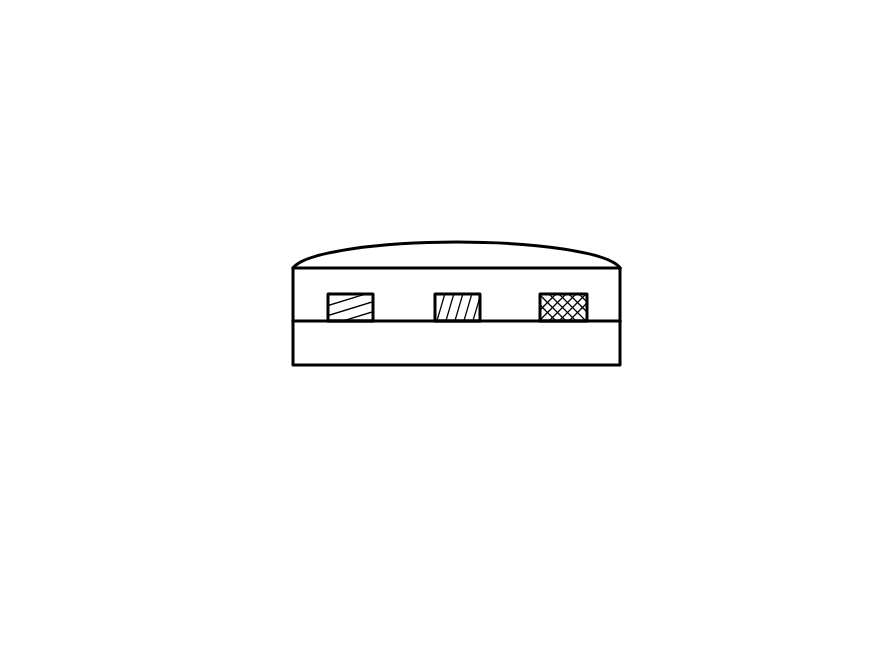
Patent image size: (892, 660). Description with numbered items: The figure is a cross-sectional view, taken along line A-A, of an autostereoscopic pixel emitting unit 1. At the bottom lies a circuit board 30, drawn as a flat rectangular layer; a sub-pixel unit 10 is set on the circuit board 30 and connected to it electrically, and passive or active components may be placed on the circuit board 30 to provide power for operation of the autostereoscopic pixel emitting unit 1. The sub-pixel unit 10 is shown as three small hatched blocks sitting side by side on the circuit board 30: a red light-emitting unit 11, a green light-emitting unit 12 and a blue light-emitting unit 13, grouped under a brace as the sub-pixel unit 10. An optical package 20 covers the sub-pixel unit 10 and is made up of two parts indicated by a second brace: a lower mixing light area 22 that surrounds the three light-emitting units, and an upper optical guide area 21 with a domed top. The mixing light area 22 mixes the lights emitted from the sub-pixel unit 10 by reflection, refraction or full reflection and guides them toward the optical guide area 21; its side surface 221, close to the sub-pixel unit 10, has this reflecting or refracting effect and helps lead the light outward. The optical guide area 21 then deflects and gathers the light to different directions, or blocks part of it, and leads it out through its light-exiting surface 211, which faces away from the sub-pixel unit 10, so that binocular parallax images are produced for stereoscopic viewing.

The autostereoscopic pixel emitting unit 1 is at (643, 107).
The sub-pixel unit 10 is at (577, 128).
The red light-emitting unit 11 is at (353, 294).
The green light-emitting unit 12 is at (462, 294).
The blue light-emitting unit 13 is at (565, 294).
The optical package 20 is at (178, 178).
The optical guide area 21 is at (297, 258).
The light-exiting surface 211 is at (597, 242).
The mixing light area 22 is at (312, 295).
The side surface 221 is at (620, 295).
The circuit board 30 is at (613, 343).